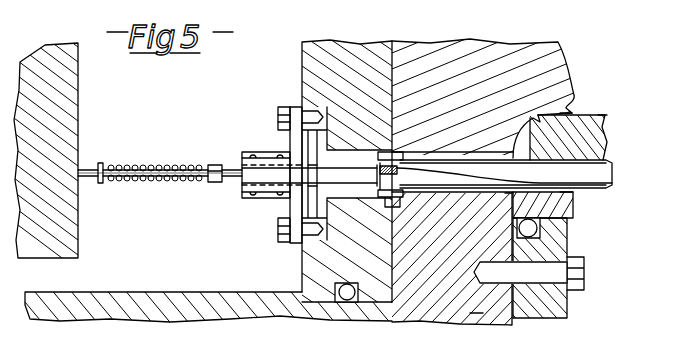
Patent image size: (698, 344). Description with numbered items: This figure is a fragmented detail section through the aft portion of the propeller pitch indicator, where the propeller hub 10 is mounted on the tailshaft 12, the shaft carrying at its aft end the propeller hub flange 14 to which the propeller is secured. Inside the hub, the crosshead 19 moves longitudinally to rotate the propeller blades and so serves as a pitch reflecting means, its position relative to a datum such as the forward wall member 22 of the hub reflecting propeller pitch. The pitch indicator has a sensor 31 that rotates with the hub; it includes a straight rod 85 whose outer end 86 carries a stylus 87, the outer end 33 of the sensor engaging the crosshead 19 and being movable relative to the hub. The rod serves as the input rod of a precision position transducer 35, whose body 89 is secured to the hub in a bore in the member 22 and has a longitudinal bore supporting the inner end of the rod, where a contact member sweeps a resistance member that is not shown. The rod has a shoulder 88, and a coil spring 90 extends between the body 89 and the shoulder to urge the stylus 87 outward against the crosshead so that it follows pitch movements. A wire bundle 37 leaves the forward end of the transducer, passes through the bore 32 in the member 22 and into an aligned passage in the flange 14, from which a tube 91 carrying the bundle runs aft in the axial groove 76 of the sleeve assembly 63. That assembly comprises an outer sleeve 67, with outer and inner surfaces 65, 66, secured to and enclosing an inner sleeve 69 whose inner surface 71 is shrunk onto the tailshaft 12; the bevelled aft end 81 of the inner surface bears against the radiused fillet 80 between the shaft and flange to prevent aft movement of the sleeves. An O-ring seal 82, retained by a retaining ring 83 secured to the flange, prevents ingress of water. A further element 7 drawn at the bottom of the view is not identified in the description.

The base plate 7 is at (208, 172).
The propeller hub 10 is at (330, 57).
The tailshaft 12 is at (489, 36).
The propeller hub flange 14 is at (483, 313).
The crosshead 19 is at (62, 105).
The forward wall member 22 is at (302, 78).
The sensor 31 is at (267, 150).
The bore 32 is at (378, 152).
The outer end 33 is at (147, 192).
The precision position transducer 35 is at (224, 150).
The wire bundle 37 is at (420, 163).
The sleeve assembly 63 is at (622, 182).
The outer surface 65 is at (573, 225).
The inner surface 66 is at (513, 195).
The outer sleeve 67 is at (575, 217).
The inner sleeve 69 is at (582, 134).
The inner surface 71 is at (610, 113).
The axial groove 76 is at (578, 197).
The radiused fillet 80 is at (567, 115).
The bevelled aft end 81 is at (538, 117).
The O-ring seal 82 is at (517, 228).
The retaining ring 83 is at (567, 310).
The straight rod 85 is at (172, 152).
The outer end 86 is at (78, 178).
The stylus 87 is at (86, 144).
The shoulder 88 is at (118, 152).
The body 89 is at (220, 183).
The coil spring 90 is at (165, 183).
The tube 91 is at (583, 160).